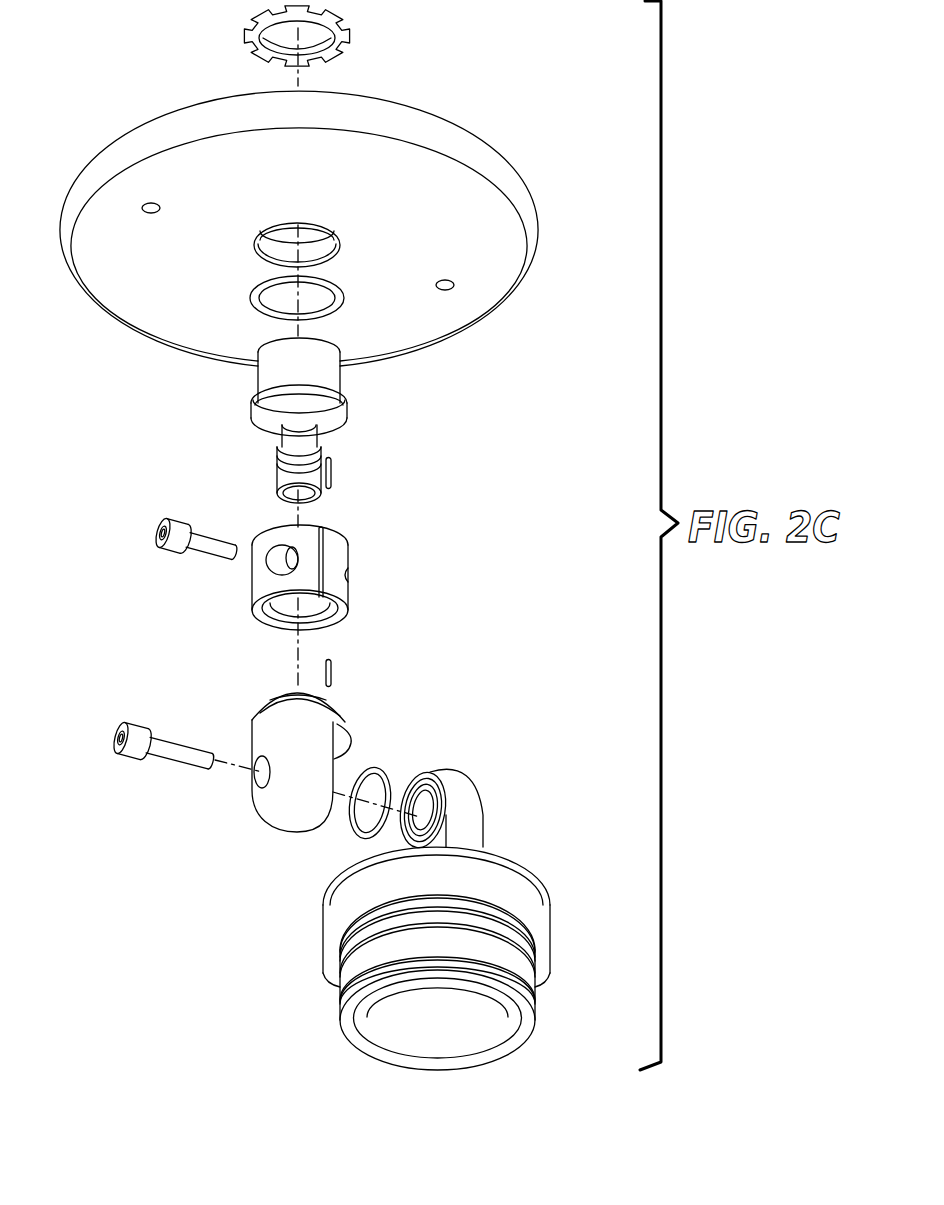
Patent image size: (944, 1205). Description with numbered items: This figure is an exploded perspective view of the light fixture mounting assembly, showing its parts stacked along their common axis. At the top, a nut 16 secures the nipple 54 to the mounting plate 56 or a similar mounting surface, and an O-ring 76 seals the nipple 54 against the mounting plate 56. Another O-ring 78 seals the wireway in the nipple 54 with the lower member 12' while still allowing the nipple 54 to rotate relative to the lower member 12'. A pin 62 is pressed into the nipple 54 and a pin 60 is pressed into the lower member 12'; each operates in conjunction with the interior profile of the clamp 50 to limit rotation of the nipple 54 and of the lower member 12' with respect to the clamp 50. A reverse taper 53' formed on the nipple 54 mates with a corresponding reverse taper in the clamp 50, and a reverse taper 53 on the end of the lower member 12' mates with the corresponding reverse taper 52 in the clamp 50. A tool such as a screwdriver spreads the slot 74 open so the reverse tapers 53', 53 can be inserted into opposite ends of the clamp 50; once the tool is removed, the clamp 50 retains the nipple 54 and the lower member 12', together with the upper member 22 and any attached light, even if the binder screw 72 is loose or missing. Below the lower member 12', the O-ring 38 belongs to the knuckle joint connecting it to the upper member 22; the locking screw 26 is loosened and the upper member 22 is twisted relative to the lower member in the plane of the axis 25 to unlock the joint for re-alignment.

The nut 16 is at (353, 37).
The mounting plate 56 is at (516, 176).
The O-ring 76 is at (345, 300).
The nipple 54 is at (348, 407).
The reverse taper 53' is at (269, 407).
The O-ring 78 is at (281, 462).
The pin 62 is at (333, 463).
The slot 74 is at (321, 530).
The binder screw 72 is at (200, 530).
The clamp 50 is at (348, 560).
The reverse taper 52 is at (277, 625).
The pin 60 is at (333, 672).
The reverse taper 53 is at (274, 680).
The locking screw 26 is at (155, 730).
The axis 25 is at (222, 757).
The lower member 12' is at (338, 760).
The O-ring 38 is at (380, 767).
The upper member 22 is at (472, 788).